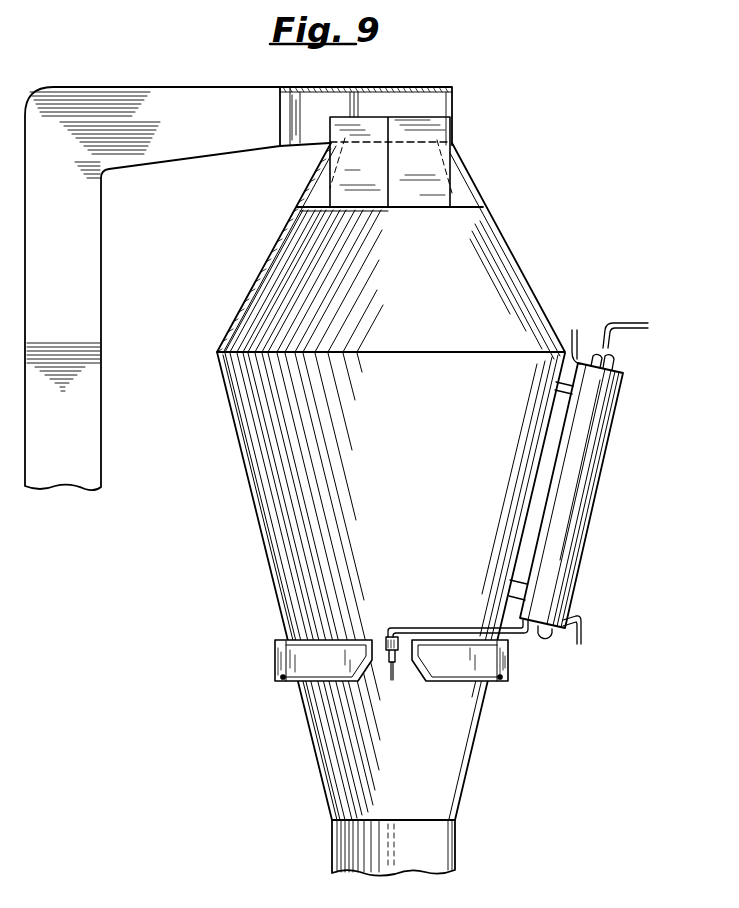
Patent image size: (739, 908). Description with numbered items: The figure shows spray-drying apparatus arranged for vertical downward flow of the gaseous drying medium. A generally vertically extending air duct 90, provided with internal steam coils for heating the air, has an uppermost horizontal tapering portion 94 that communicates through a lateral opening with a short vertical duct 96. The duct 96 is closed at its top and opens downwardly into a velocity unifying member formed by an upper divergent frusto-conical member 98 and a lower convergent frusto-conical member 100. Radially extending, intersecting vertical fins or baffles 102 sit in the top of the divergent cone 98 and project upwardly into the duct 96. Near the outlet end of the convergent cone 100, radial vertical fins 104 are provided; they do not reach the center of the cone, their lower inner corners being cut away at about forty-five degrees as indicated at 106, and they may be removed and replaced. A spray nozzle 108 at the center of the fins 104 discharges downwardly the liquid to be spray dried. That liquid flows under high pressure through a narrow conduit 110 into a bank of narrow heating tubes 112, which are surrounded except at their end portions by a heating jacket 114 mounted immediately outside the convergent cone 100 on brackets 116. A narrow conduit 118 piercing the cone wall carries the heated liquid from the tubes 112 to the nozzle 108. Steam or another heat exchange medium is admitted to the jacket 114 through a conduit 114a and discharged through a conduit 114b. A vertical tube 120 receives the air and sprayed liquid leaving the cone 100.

The air duct 90 is at (101, 283).
The horizontal tapering portion 94 is at (163, 87).
The short vertical duct 96 is at (455, 101).
The upper divergent frusto-conical member 98 is at (412, 301).
The lower convergent frusto-conical member 100 is at (408, 474).
The vertical fins or baffles 102 is at (438, 184).
The radial vertical fins 104 is at (338, 671).
The cut-away lower inner corner 106 is at (366, 676).
The spray nozzle 108 is at (388, 637).
The narrow conduit 110 is at (637, 322).
The narrow heating tubes 112 is at (616, 362).
The heating jacket 114 is at (598, 458).
The conduit 114a is at (598, 307).
The conduit 114b is at (583, 637).
The brackets 116 is at (567, 384).
The narrow conduit 118 is at (437, 630).
The vertical tube 120 is at (457, 858).